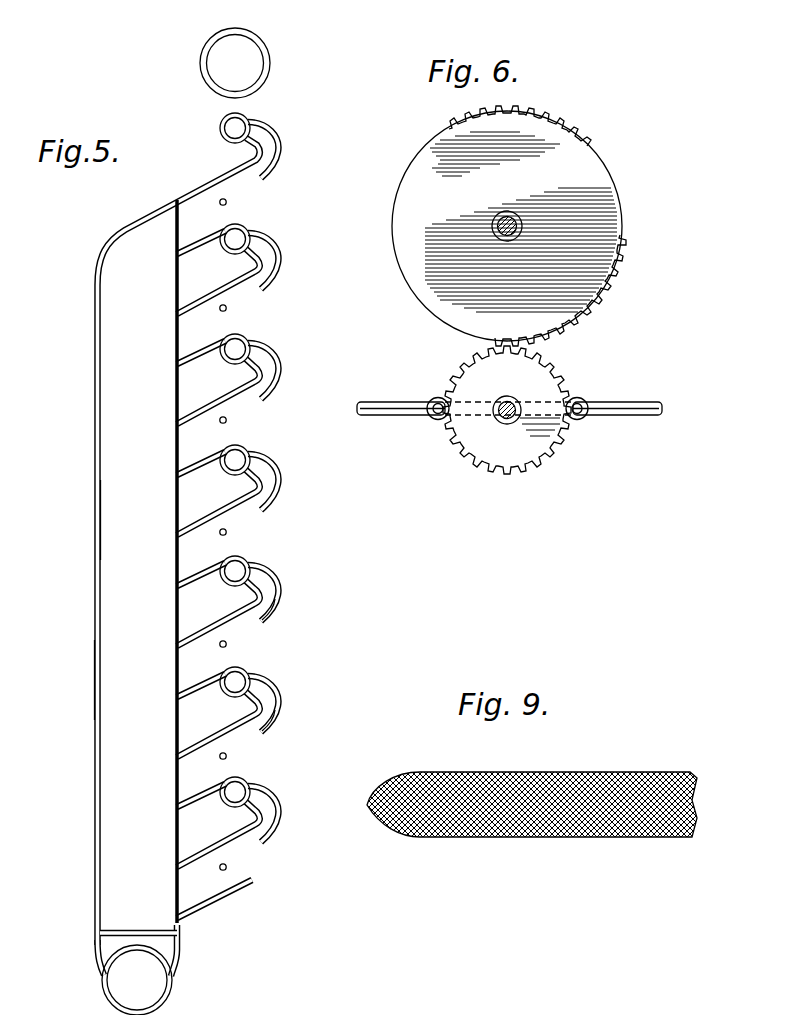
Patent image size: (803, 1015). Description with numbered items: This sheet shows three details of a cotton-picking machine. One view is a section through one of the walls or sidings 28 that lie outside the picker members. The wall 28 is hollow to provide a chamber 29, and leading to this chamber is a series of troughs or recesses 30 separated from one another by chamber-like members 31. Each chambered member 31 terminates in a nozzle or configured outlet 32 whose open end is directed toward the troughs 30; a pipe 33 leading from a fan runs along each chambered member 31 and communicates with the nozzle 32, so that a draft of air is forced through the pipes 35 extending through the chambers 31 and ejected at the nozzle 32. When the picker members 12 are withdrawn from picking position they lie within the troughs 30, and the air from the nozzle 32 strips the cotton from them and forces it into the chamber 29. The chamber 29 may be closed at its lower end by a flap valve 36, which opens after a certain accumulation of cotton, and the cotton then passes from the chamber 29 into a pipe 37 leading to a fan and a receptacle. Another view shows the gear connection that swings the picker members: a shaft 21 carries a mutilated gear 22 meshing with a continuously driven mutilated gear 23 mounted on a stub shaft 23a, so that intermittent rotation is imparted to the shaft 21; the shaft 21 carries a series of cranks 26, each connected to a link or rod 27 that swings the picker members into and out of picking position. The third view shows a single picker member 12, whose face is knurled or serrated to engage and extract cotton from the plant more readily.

In FIG. 5, the picker member 12 is at (227, 203).
In FIG. 9, the picker member 12 is at (529, 772).
In FIG. 6, the shaft 21 is at (507, 396).
In FIG. 6, the mutilated gear 22 is at (550, 382).
In FIG. 6, the mutilated gear 23 is at (622, 226).
In FIG. 6, the stub shaft 23a is at (492, 224).
In FIG. 6, the crank 26 is at (548, 418).
In FIG. 6, the link or rod 27 is at (383, 402).
In FIG. 5, the wall or siding 28 is at (94, 465).
In FIG. 5, the chamber 29 is at (100, 530).
In FIG. 5, the trough or recess 30 is at (176, 562).
In FIG. 5, the chamber-like member 31 is at (175, 620).
In FIG. 5, the nozzle or configured outlet 32 is at (262, 626).
In FIG. 5, the pipe 33 is at (95, 672).
In FIG. 5, the pipe 35 is at (250, 674).
In FIG. 5, the flap valve 36 is at (140, 930).
In FIG. 5, the pipe 37 is at (156, 985).